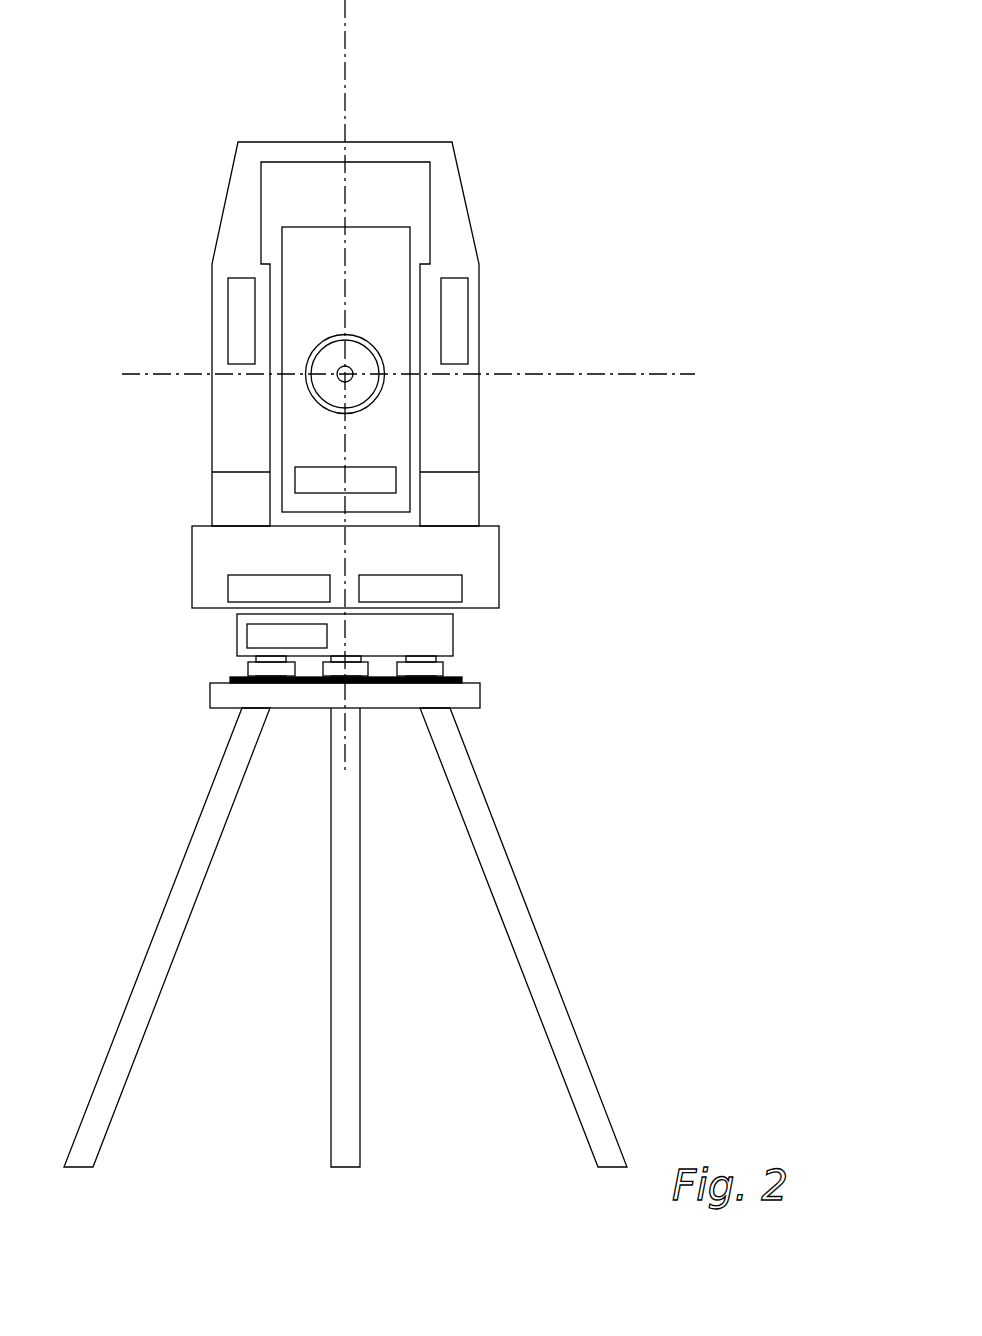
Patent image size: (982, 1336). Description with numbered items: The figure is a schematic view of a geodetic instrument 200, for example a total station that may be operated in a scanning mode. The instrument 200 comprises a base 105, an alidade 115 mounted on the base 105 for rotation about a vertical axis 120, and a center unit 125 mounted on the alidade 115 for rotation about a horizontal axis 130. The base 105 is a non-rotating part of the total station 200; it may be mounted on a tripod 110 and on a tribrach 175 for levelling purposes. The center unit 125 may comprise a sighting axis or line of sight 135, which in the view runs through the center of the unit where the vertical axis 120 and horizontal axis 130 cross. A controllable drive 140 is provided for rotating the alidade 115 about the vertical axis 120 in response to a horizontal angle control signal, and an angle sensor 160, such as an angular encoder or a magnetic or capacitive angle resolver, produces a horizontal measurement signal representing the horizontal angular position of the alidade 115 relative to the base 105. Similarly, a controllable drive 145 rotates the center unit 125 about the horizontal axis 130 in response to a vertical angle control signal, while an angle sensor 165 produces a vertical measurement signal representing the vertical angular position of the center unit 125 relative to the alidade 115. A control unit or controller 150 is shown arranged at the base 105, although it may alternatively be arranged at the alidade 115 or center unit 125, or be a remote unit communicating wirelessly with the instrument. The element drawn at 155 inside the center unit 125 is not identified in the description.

The geodetic instrument 200 is at (150, 92).
The base 105 is at (455, 633).
The tripod 110 is at (535, 922).
The alidade 115 is at (500, 552).
The vertical axis 120 is at (345, 27).
The center unit 125 is at (300, 237).
The horizontal axis 130 is at (585, 374).
The sighting axis 135 is at (352, 377).
The controllable drive 140 is at (237, 590).
The controllable drive 145 is at (237, 297).
The control unit 150 is at (250, 638).
The sensor unit 155 is at (387, 480).
The angle sensor 160 is at (448, 588).
The angle sensor 165 is at (468, 290).
The tribrach 175 is at (463, 672).